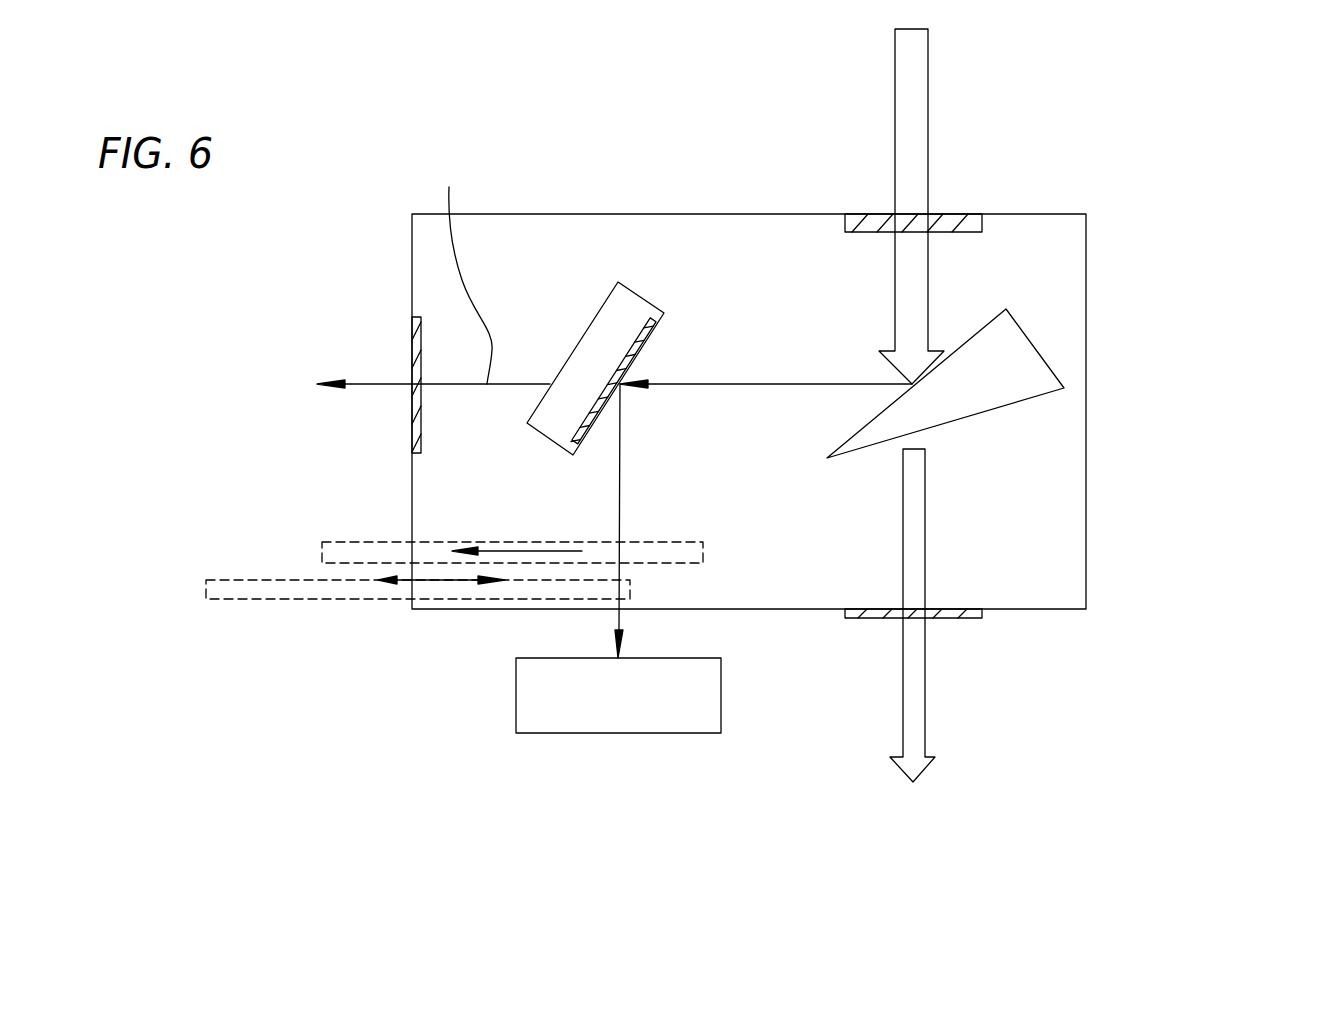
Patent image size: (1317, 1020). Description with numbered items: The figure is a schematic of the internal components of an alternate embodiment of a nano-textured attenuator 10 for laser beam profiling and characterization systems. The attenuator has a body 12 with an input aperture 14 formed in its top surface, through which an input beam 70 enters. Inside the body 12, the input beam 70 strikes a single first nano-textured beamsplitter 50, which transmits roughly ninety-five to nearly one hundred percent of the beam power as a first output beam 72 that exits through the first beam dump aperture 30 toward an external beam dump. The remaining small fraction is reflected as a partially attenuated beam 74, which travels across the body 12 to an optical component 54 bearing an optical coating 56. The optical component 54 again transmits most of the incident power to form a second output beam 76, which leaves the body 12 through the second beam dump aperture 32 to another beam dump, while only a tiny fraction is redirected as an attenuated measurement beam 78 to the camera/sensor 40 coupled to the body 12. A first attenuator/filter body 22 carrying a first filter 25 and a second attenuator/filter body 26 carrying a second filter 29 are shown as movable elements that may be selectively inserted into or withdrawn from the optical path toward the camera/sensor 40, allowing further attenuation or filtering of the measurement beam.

The nano-textured attenuator 10 is at (1216, 141).
The body 12 is at (1086, 268).
The input aperture 14 is at (863, 214).
The first attenuator/filter body 22 is at (229, 590).
The first filter 25 is at (532, 552).
The second attenuator/filter body 26 is at (328, 552).
The second filter 29 is at (462, 588).
The first beam dump aperture 30 is at (945, 620).
The second beam dump aperture 32 is at (412, 333).
The camera/sensor 40 is at (618, 695).
The first nano-textured beamsplitter 50 is at (945, 383).
The optical component 54 is at (595, 368).
The optical coating 56 is at (653, 350).
The input beam 70 is at (928, 90).
The first output beam 72 is at (907, 670).
The partially attenuated beam 74 is at (778, 384).
The second output beam 76 is at (383, 384).
The attenuated measurement beam 78 is at (618, 620).